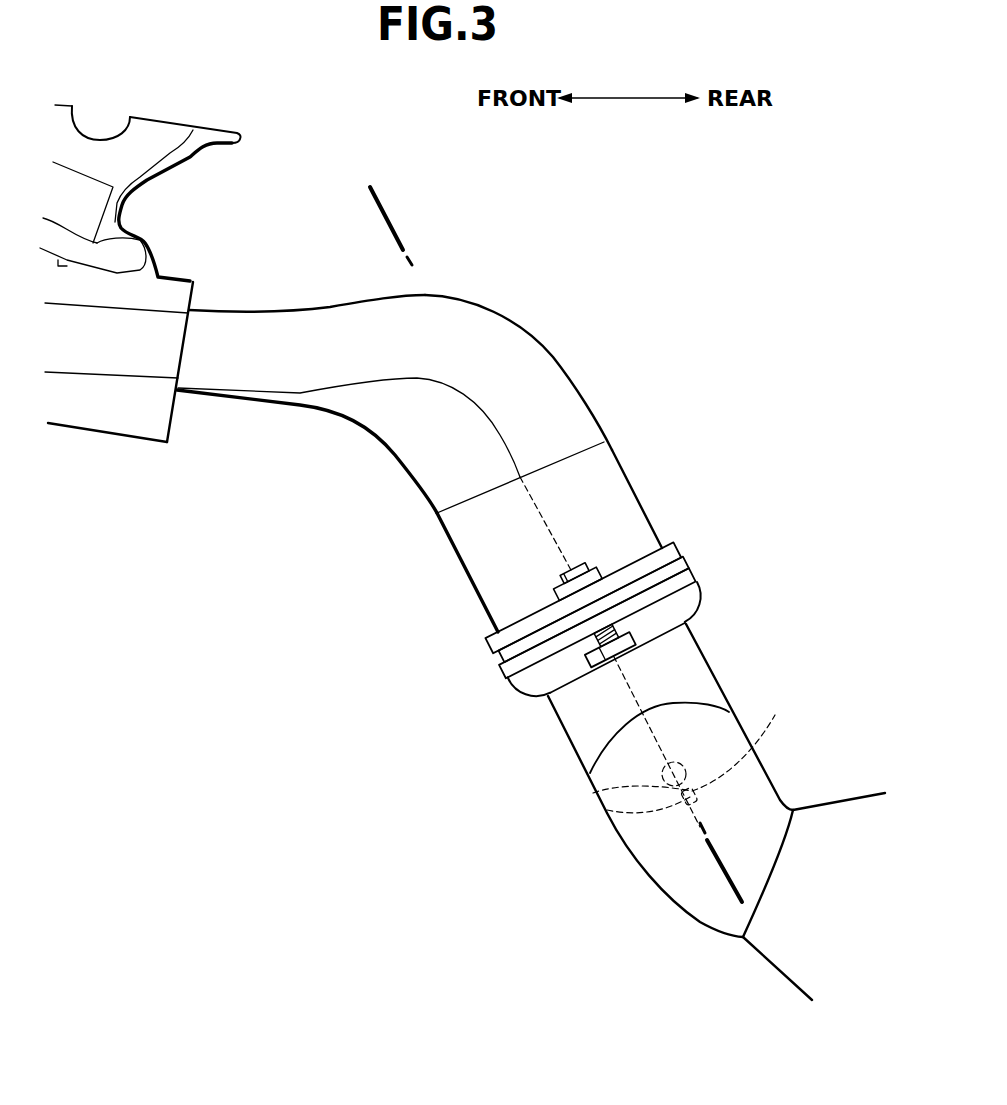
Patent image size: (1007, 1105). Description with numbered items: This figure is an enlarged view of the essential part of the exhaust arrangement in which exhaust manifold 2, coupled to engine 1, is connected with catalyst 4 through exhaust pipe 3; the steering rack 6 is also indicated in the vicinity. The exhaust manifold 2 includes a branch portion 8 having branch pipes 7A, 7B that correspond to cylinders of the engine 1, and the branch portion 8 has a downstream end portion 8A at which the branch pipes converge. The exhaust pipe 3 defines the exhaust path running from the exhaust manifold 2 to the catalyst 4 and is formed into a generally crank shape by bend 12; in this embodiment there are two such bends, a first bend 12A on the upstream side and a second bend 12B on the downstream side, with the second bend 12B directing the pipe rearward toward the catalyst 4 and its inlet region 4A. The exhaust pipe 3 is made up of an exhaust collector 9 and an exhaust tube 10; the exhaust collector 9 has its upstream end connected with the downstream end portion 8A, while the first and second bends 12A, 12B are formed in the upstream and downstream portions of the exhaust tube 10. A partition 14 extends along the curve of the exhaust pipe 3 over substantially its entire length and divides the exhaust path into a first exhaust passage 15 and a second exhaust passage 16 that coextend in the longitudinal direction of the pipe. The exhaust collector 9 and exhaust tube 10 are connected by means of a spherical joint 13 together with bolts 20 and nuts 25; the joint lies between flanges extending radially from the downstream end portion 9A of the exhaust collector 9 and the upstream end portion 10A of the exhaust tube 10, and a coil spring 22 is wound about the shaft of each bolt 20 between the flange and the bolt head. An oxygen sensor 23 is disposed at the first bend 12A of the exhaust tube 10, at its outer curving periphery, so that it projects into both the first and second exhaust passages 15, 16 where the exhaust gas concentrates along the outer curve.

The engine 1 is at (160, 280).
The exhaust manifold 2 is at (262, 282).
The exhaust pipe 3 is at (443, 662).
The catalyst 4 is at (798, 947).
The muffler inlet 4A is at (748, 918).
The steering rack 6 is at (392, 206).
The branch pipe 7A is at (365, 310).
The branch pipe 7B is at (342, 400).
The branch portion 8 is at (519, 306).
The downstream end portion 8A is at (533, 465).
The exhaust collector 9 is at (440, 523).
The downstream end portion 9A is at (663, 545).
The exhaust tube 10 is at (557, 718).
The upstream end portion 10A is at (527, 692).
The bend 12 is at (628, 750).
The first bend 12A is at (735, 750).
The second bend 12B is at (620, 727).
The spherical joint 13 is at (693, 573).
The partition 14 is at (540, 510).
The first exhaust passage 15 is at (620, 517).
The second exhaust passage 16 is at (480, 540).
The bolt 20 is at (630, 640).
The coil spring 22 is at (615, 625).
The oxygen sensor 23 is at (593, 793).
The nut 25 is at (553, 583).